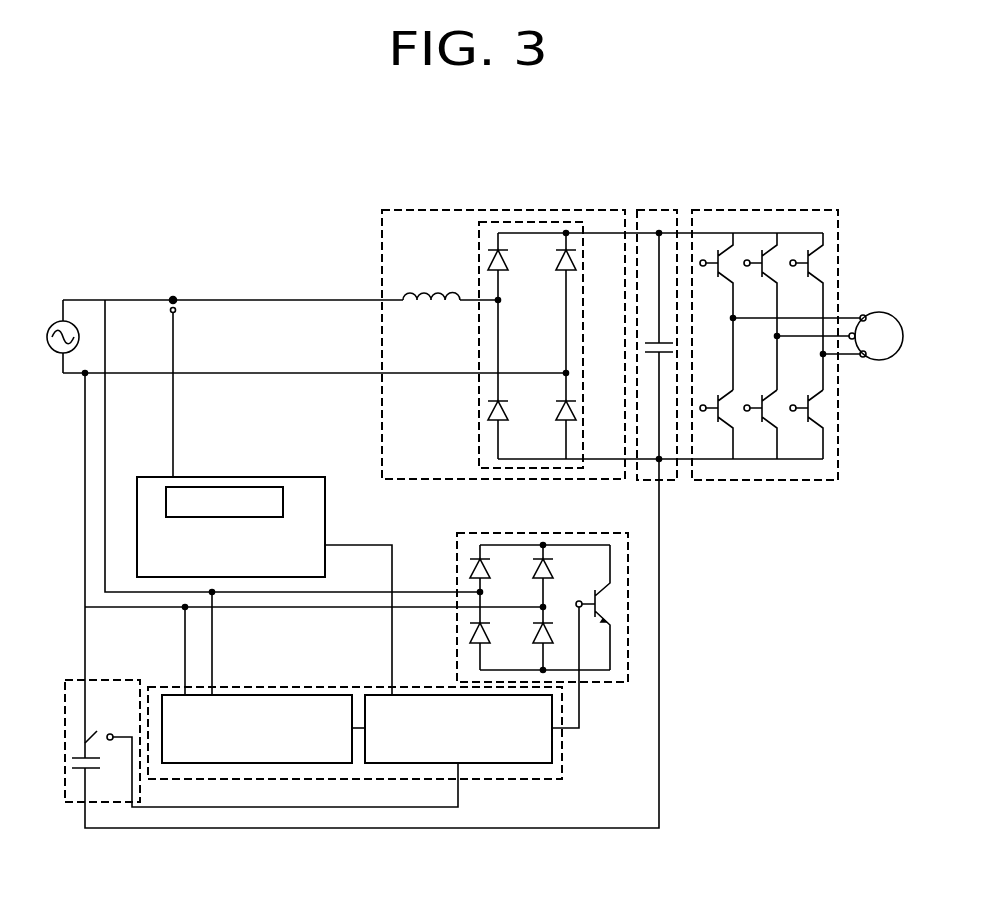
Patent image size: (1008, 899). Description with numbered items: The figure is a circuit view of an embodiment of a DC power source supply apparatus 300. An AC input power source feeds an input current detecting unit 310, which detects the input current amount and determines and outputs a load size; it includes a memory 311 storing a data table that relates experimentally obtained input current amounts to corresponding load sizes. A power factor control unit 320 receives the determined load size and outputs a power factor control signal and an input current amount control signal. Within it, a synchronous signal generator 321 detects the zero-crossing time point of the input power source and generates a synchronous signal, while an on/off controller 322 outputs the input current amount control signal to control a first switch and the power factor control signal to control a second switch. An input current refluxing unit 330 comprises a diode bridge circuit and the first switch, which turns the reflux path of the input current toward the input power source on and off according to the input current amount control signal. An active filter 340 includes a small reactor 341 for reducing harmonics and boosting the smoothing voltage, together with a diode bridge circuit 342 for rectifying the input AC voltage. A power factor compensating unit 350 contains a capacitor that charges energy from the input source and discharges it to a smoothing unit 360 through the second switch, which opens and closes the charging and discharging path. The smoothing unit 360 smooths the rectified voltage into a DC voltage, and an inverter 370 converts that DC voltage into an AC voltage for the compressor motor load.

The DC power source supply apparatus 300 is at (460, 514).
The input current detecting unit 310 is at (170, 527).
The memory 311 is at (166, 498).
The power factor control unit 320 is at (434, 781).
The synchronous signal generator 321 is at (325, 763).
The on/off controller 322 is at (522, 763).
The input current refluxing unit 330 is at (628, 607).
The active filter 340 is at (558, 316).
The small reactor 341 is at (403, 298).
The diode bridge circuit 342 is at (497, 222).
The power factor compensating unit 350 is at (101, 802).
The smoothing unit 360 is at (670, 480).
The inverter 370 is at (792, 480).